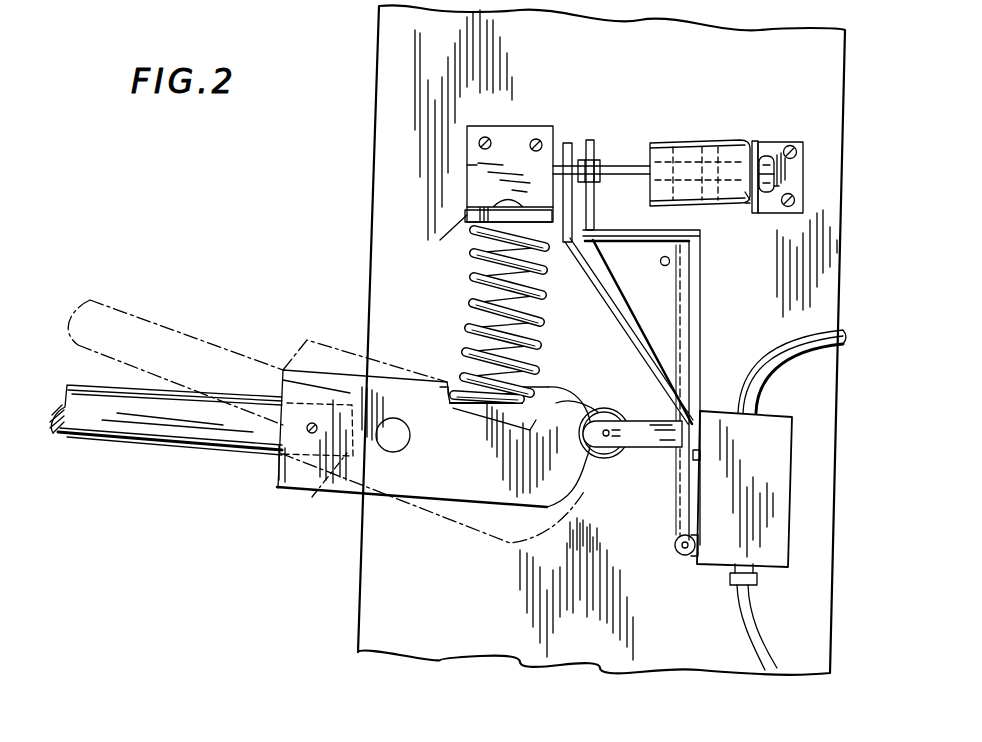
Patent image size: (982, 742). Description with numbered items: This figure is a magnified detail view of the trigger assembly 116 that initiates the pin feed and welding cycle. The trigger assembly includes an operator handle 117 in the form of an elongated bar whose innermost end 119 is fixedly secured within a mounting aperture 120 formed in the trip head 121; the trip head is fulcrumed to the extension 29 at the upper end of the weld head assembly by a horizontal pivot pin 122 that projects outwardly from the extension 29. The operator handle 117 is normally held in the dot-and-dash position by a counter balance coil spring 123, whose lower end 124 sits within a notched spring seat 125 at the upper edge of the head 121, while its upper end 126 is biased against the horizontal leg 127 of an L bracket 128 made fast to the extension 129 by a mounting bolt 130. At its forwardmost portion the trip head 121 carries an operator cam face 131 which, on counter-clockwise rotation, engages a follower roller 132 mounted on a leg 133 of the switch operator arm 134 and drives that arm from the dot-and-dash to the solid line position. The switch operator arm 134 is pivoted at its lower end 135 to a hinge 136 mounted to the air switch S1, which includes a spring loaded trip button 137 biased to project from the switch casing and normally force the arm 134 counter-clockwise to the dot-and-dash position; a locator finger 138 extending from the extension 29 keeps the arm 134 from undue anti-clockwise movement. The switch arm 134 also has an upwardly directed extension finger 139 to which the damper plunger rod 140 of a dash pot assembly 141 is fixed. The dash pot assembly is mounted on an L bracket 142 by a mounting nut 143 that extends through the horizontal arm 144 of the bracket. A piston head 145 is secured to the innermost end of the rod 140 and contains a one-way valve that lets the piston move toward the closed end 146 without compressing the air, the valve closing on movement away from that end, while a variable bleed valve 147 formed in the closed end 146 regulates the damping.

The extension 29 is at (380, 187).
The trigger assembly 116 is at (634, 126).
The operator handle 117 is at (112, 303).
The innermost end 119 is at (313, 495).
The mounting aperture 120 is at (305, 385).
The trip head 121 is at (326, 420).
The horizontal pivot pin 122 is at (397, 452).
The counter balance coil spring 123 is at (469, 301).
The lower end 124 is at (523, 382).
The notched spring seat 125 is at (550, 400).
The upper end 126 is at (470, 233).
The horizontal leg 127 is at (460, 215).
The L bracket 128 is at (513, 125).
The extension 129 is at (467, 168).
The mounting bolt 130 is at (483, 139).
The operator cam face 131 is at (610, 405).
The follower roller 132 is at (606, 462).
The leg 133 is at (643, 438).
The switch operator arm 134 is at (700, 300).
The lower end 135 is at (682, 558).
The hinge 136 is at (697, 542).
The spring loaded trip button 137 is at (700, 453).
The locator finger 138 is at (663, 265).
The extension finger 139 is at (593, 143).
The damper plunger rod 140 is at (642, 158).
The dash pot assembly 141 is at (738, 121).
The L bracket 142 is at (780, 140).
The mounting nut 143 is at (775, 188).
The horizontal arm 144 is at (755, 140).
The piston head 145 is at (710, 140).
The closed end 146 is at (747, 192).
The variable bleed valve 147 is at (774, 173).
The air switch S1 is at (783, 418).